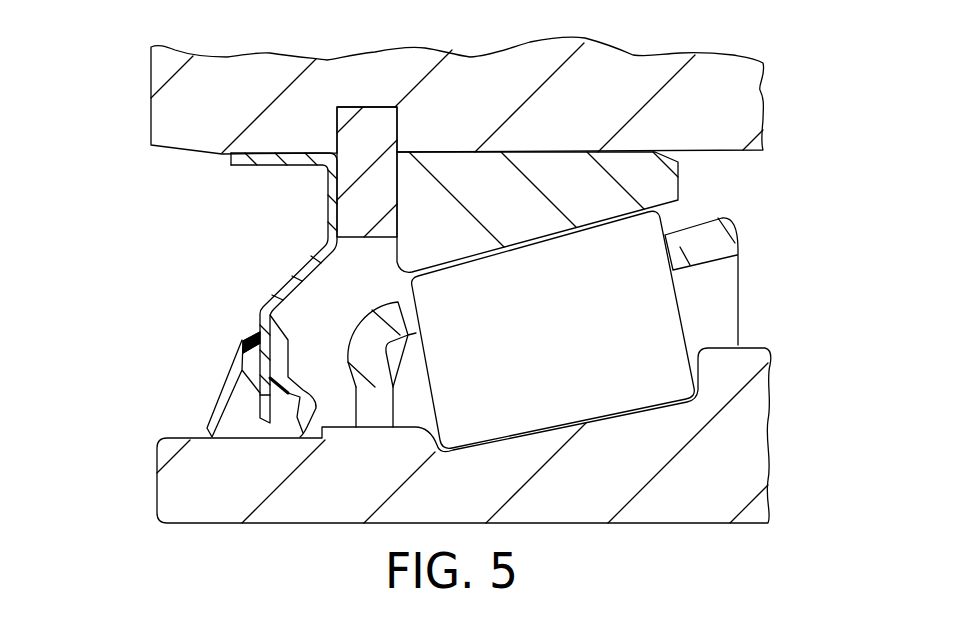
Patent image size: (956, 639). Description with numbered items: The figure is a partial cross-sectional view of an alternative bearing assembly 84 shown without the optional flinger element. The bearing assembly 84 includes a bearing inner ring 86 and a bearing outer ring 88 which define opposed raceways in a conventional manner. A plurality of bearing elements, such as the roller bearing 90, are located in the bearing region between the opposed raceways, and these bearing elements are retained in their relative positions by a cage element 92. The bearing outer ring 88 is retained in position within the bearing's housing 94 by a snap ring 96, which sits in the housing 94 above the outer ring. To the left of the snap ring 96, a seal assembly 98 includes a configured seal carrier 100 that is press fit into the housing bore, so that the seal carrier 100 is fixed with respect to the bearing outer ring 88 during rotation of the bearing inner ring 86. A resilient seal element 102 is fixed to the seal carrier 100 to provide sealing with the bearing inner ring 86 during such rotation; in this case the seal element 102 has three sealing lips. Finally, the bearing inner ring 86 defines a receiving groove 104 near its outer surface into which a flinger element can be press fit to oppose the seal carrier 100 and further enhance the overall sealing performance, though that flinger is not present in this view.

The bearing assembly 84 is at (118, 175).
The bearing inner ring 86 is at (158, 458).
The bearing outer ring 88 is at (680, 177).
The roller bearing 90 is at (568, 354).
The cage element 92 is at (740, 270).
The housing 94 is at (152, 68).
The snap ring 96 is at (362, 238).
The seal assembly 98 is at (226, 291).
The seal carrier 100 is at (283, 283).
The resilient seal element 102 is at (240, 368).
The receiving groove 104 is at (178, 440).